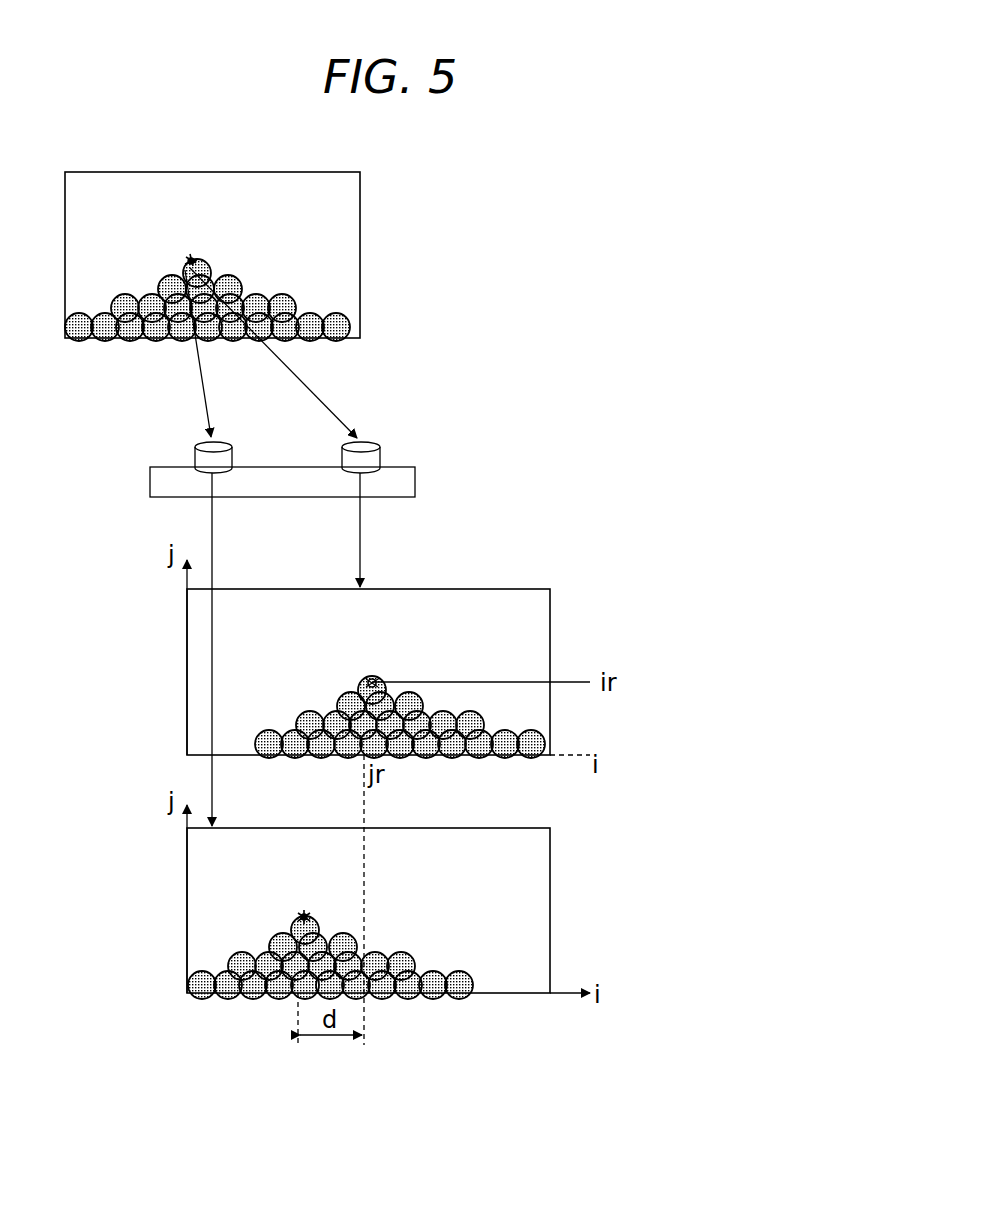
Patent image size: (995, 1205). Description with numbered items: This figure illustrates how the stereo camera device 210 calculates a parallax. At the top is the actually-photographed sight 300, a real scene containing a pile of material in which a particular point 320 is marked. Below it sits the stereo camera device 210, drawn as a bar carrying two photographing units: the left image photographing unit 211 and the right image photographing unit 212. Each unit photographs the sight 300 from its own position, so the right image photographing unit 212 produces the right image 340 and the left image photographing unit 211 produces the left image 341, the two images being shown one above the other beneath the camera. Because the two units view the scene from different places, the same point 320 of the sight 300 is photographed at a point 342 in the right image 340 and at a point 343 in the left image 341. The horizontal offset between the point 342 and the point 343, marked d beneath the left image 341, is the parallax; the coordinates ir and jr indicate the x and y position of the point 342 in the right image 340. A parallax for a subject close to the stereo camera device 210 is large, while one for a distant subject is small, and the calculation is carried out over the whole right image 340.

The actually-photographed sight 300 is at (360, 194).
The point 320 is at (190, 257).
The stereo camera device 210 is at (150, 479).
The left image photographing unit 211 is at (233, 450).
The right image photographing unit 212 is at (366, 441).
The right image 340 is at (551, 620).
The point 342 is at (368, 679).
The left image 341 is at (551, 864).
The point 343 is at (300, 913).